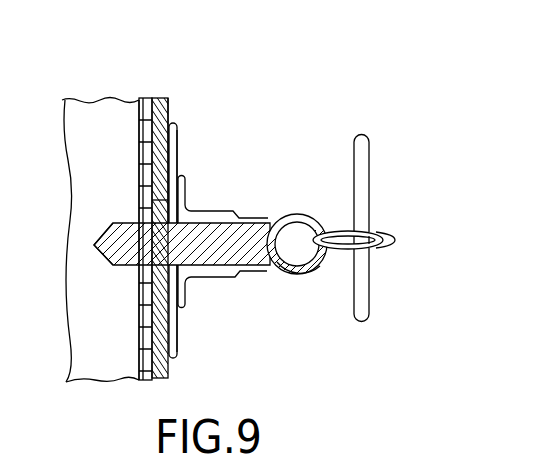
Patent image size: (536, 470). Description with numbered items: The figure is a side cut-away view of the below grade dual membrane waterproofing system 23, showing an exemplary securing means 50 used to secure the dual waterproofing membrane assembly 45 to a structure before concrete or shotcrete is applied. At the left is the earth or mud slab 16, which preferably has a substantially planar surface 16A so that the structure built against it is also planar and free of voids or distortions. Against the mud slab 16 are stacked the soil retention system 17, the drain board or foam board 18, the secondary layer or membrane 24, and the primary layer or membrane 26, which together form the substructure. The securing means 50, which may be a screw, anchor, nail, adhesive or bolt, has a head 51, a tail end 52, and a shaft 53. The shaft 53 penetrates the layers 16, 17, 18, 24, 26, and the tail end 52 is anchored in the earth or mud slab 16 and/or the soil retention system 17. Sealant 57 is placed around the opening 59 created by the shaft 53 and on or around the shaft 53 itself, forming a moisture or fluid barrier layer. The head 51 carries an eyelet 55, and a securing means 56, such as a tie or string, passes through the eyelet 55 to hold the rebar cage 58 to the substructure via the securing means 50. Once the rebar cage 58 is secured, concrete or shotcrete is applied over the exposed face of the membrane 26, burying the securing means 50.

The earth or mud slab 16 is at (78, 118).
The planar surface 16A is at (140, 128).
The soil retention system 17 is at (146, 98).
The drain board or foam board 18 is at (161, 100).
The below grade dual membrane waterproofing system 23 is at (306, 72).
The secondary layer or membrane 24 is at (169, 110).
The primary layer or membrane 26 is at (176, 126).
The dual waterproofing membrane assembly 45 is at (178, 152).
The securing means 50 is at (292, 215).
The head 51 is at (314, 231).
The tail end 52 is at (110, 246).
The shaft 53 is at (200, 228).
The opening or eyelet 55 is at (317, 271).
The securing means 56 is at (383, 236).
The sealant 57 is at (186, 186).
The rebar cage 58 is at (366, 167).
The opening 59 is at (160, 215).